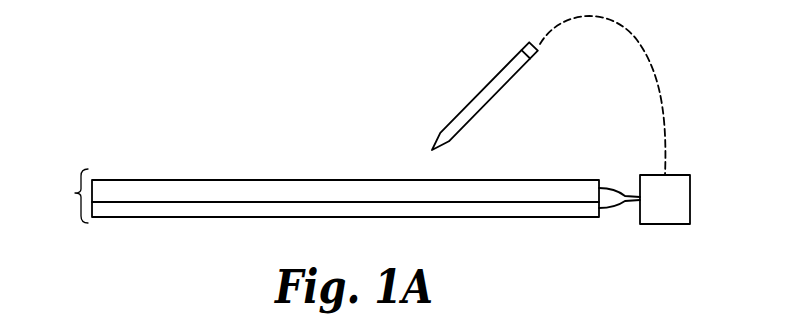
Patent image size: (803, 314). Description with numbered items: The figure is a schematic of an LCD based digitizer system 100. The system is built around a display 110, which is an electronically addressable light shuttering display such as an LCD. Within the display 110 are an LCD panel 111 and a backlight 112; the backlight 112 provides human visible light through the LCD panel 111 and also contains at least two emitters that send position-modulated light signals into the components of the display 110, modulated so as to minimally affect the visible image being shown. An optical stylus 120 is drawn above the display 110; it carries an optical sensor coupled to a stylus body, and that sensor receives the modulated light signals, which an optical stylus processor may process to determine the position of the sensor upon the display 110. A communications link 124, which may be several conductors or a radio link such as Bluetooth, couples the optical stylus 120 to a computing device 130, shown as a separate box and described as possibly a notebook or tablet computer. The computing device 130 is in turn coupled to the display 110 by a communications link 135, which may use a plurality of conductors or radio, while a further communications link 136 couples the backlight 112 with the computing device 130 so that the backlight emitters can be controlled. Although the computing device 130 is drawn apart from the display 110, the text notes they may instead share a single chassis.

The stylus system 100 is at (260, 85).
The display 110 is at (59, 196).
The LCD panel 111 is at (195, 187).
The backlight 112 is at (222, 208).
The optical stylus 120 is at (472, 100).
The communications link 124 is at (650, 75).
The computing device 130 is at (656, 180).
The communications link 135 is at (628, 192).
The communications link 136 is at (625, 204).